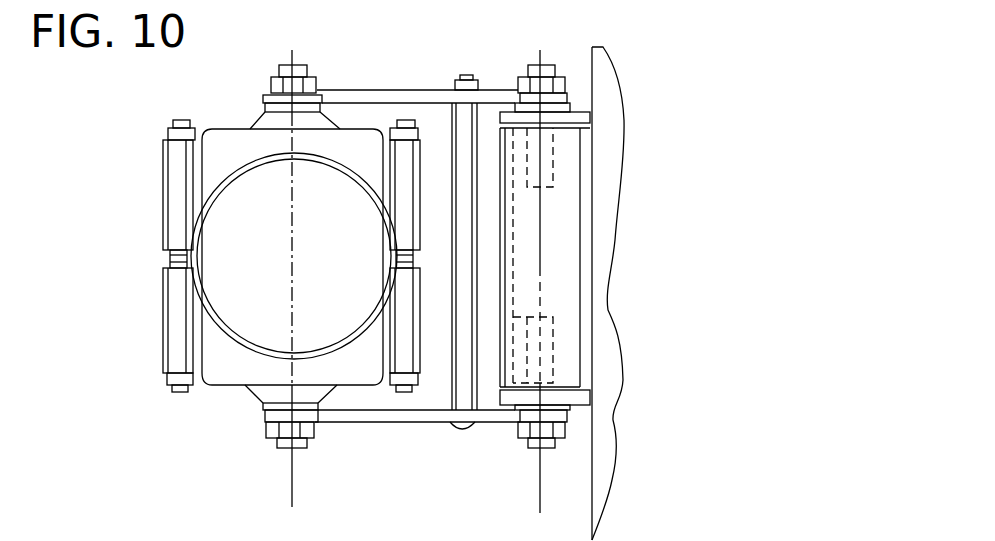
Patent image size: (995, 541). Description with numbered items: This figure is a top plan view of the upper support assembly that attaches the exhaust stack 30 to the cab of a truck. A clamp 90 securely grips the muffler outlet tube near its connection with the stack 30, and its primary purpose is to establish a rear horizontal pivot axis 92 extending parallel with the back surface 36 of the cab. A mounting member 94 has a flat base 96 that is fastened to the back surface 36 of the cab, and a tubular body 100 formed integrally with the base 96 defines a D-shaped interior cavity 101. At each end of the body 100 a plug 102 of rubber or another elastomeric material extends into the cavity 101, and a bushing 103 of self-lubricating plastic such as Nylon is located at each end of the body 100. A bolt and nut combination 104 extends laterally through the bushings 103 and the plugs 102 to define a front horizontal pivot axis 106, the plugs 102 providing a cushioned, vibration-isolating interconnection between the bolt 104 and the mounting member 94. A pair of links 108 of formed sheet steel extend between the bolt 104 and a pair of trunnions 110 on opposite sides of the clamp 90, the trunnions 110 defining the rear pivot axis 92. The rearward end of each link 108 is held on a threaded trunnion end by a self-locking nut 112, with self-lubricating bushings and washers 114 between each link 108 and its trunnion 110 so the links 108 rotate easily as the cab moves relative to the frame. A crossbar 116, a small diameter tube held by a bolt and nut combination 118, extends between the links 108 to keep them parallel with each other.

The exhaust stack 30 is at (205, 205).
The back surface of the cab 36 is at (590, 447).
The clamp 90 is at (165, 313).
The rear horizontal pivot axis 92 is at (293, 478).
The mounting member 94 is at (500, 206).
The flat base 96 is at (590, 352).
The tubular body 100 is at (565, 252).
The D-shaped interior cavity 101 is at (508, 275).
The plug 102 is at (553, 188).
The bushing 103 is at (577, 117).
The bolt and nut combination 104 is at (538, 57).
The front horizontal pivot axis 106 is at (535, 465).
The link 108 is at (420, 90).
The trunnion 110 is at (260, 115).
The self-locking nut 112 is at (317, 82).
The bushings and washers 114 is at (267, 93).
The crossbar 116 is at (452, 332).
The bolt and nut combination 118 is at (468, 78).